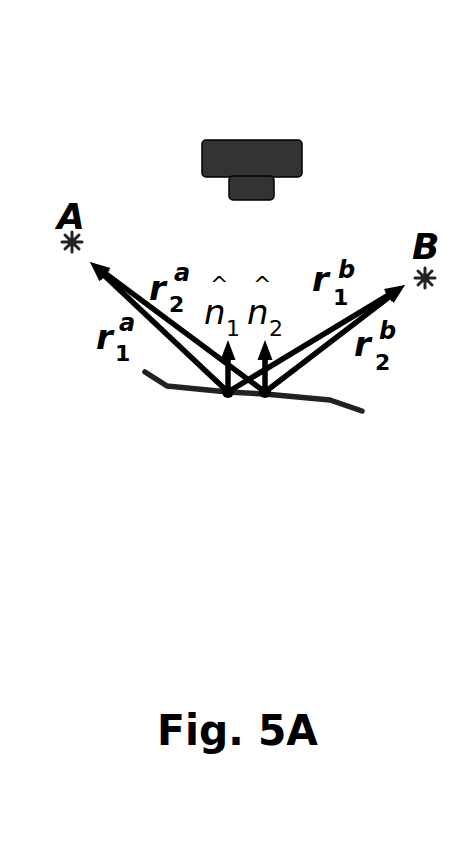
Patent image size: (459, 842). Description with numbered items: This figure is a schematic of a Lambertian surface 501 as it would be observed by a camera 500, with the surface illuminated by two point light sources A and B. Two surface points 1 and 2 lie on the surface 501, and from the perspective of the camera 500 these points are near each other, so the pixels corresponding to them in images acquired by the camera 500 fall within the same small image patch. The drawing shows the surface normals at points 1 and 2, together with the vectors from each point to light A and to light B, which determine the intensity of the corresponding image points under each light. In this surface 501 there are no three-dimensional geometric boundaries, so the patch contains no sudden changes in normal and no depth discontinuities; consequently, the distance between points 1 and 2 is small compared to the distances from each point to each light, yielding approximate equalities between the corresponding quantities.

The camera 500 is at (260, 140).
The Lambertian surface 501 is at (167, 387).
The point 1 is at (230, 420).
The point 2 is at (265, 421).